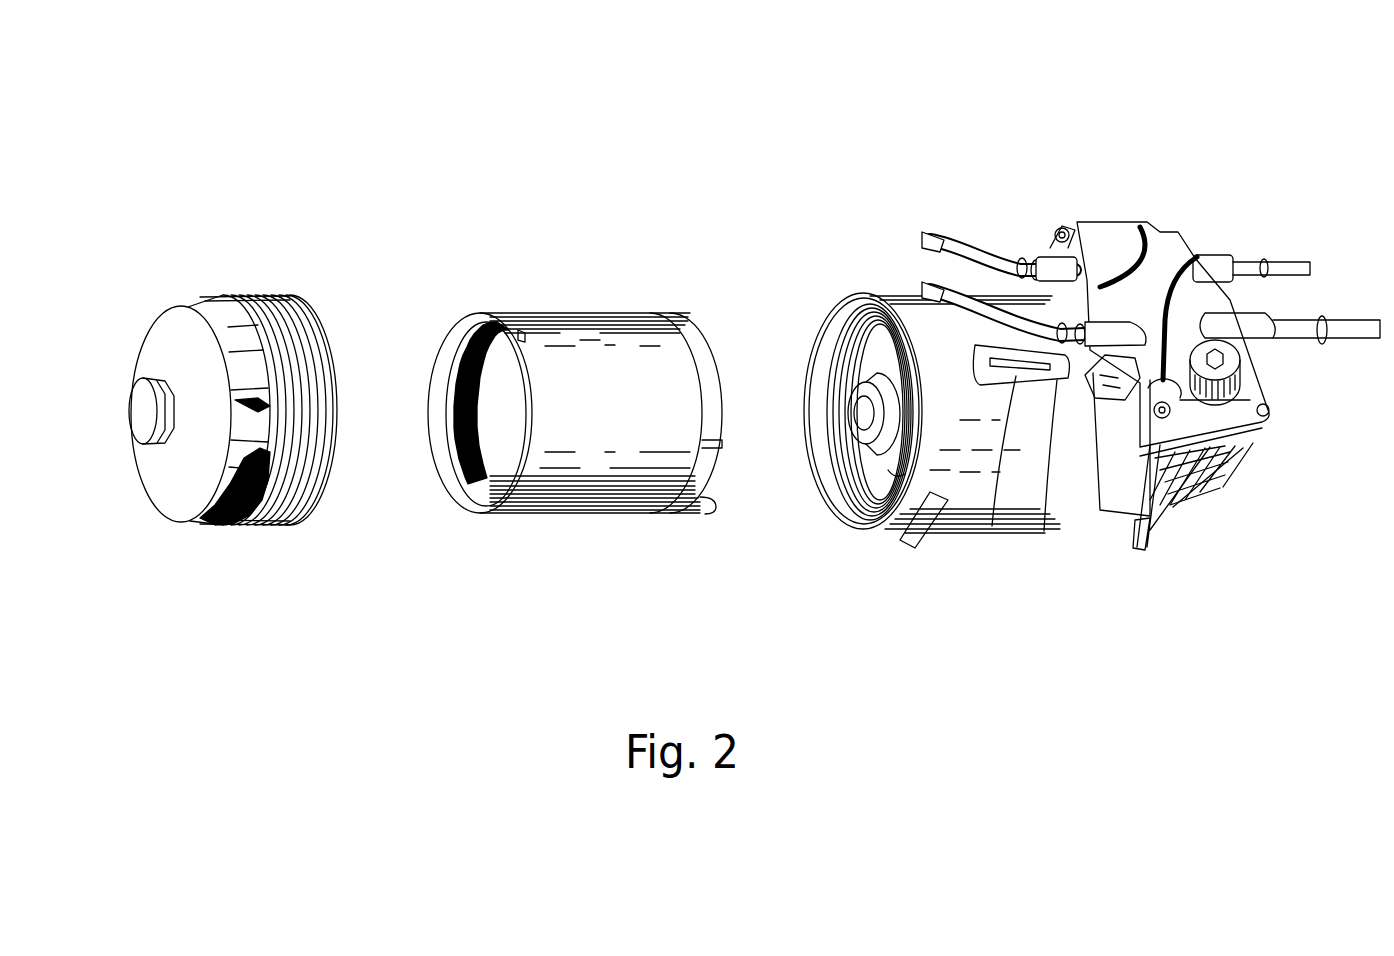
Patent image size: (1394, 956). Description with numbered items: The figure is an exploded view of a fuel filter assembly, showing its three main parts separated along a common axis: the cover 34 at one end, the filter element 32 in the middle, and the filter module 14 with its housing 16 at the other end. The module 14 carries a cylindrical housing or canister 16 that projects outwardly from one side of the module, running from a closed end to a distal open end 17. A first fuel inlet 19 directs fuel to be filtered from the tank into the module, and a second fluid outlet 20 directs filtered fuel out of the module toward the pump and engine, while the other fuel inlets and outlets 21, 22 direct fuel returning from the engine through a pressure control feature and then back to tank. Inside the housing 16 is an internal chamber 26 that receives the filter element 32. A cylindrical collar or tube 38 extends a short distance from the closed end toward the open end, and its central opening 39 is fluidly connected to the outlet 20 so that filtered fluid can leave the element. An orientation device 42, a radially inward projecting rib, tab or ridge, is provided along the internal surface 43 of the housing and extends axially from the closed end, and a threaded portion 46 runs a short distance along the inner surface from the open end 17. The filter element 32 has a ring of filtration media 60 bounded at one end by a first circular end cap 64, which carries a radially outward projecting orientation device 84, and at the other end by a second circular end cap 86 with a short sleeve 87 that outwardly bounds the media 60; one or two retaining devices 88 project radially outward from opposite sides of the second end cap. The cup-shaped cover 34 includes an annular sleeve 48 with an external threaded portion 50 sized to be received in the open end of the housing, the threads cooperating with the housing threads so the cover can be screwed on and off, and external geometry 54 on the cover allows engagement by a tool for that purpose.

The filter module 14 is at (1220, 480).
The housing 16 is at (998, 480).
The open end 17 is at (827, 478).
The first fuel inlet 19 is at (1262, 262).
The second fluid outlet 20 is at (948, 252).
The fuel inlet 21 is at (1300, 350).
The fuel outlet 22 is at (920, 284).
The internal chamber 26 is at (822, 464).
The filter element 32 is at (600, 520).
The cover 34 is at (186, 490).
The collar 38 is at (840, 302).
The central opening 39 is at (856, 413).
The orientation device 42 is at (1052, 410).
The internal surface 43 is at (862, 508).
The threaded portion 46 is at (845, 375).
The annular sleeve 48 is at (262, 298).
The external threaded portion 50 is at (320, 492).
The external geometry 54 is at (136, 411).
The filtration media 60 is at (612, 345).
The first end cap 64 is at (706, 494).
The orientation device 84 is at (680, 452).
The second end cap 86 is at (475, 484).
The sleeve 87 is at (495, 512).
The retaining devices 88 is at (522, 330).